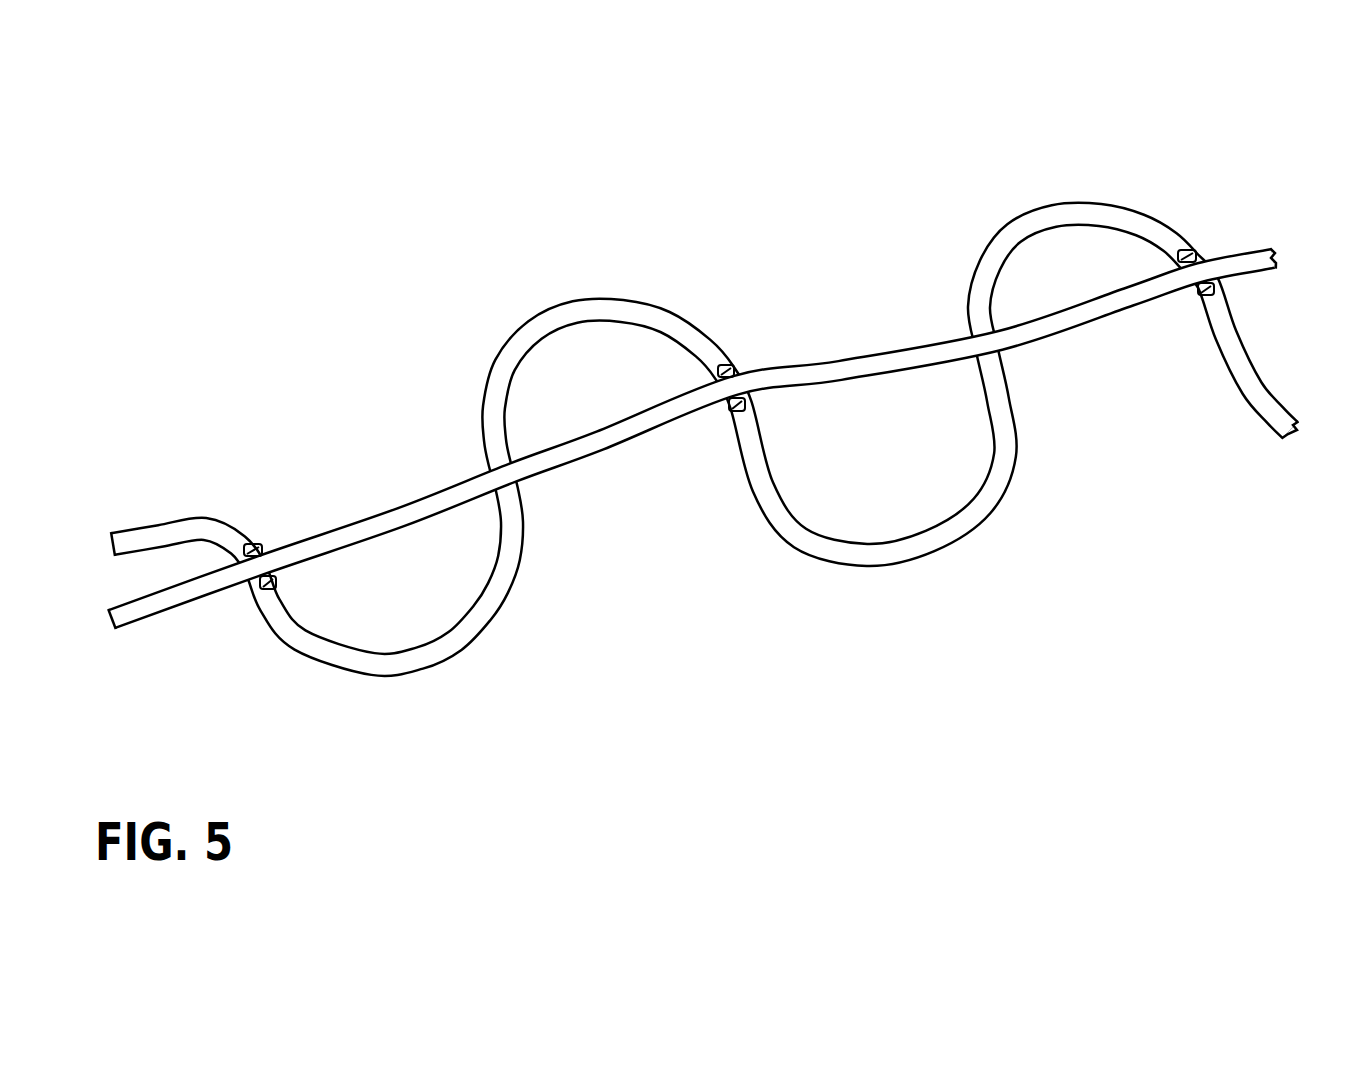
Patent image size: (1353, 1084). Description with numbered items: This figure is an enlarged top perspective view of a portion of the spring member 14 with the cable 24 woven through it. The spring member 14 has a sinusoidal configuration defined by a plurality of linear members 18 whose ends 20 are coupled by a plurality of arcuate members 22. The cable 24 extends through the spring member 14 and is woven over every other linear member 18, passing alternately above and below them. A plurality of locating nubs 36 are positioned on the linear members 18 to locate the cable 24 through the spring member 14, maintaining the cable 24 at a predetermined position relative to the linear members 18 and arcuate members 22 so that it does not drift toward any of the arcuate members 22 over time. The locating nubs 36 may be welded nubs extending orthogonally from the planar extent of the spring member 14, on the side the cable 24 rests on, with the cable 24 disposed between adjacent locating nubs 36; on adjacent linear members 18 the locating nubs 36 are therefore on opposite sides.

The spring member 14 is at (508, 295).
The linear members 18 is at (1228, 315).
The ends 20 is at (698, 328).
The arcuate members 22 is at (575, 307).
The cable 24 is at (828, 367).
The locating nubs 36 is at (732, 366).